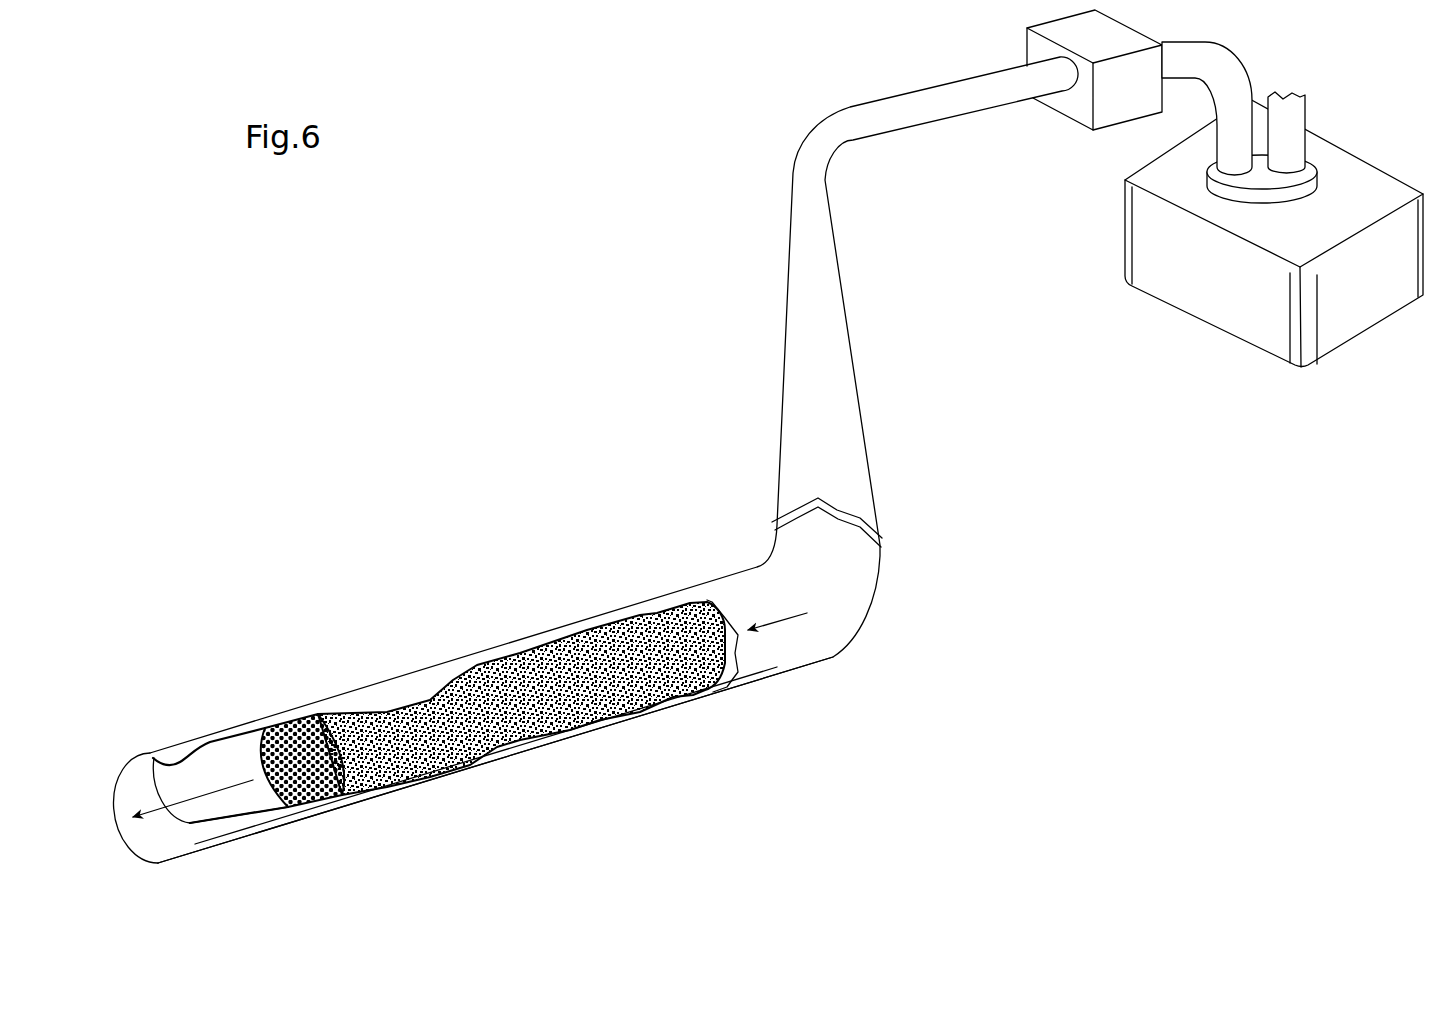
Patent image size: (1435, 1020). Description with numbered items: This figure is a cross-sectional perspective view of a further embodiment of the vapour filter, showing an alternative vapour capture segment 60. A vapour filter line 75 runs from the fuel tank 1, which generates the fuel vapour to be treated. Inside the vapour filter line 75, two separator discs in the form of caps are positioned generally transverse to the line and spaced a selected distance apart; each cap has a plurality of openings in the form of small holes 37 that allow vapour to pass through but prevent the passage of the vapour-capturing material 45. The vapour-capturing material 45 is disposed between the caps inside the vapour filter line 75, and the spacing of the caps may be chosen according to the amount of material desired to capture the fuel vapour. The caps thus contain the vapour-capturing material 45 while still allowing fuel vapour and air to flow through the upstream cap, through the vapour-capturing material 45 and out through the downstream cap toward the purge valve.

The fuel tank 1 is at (1190, 267).
The small holes 37 is at (262, 767).
The vapour-capturing material 45 is at (557, 640).
The vapour capture segment 60 is at (542, 758).
The vapour filter line 75 is at (463, 648).